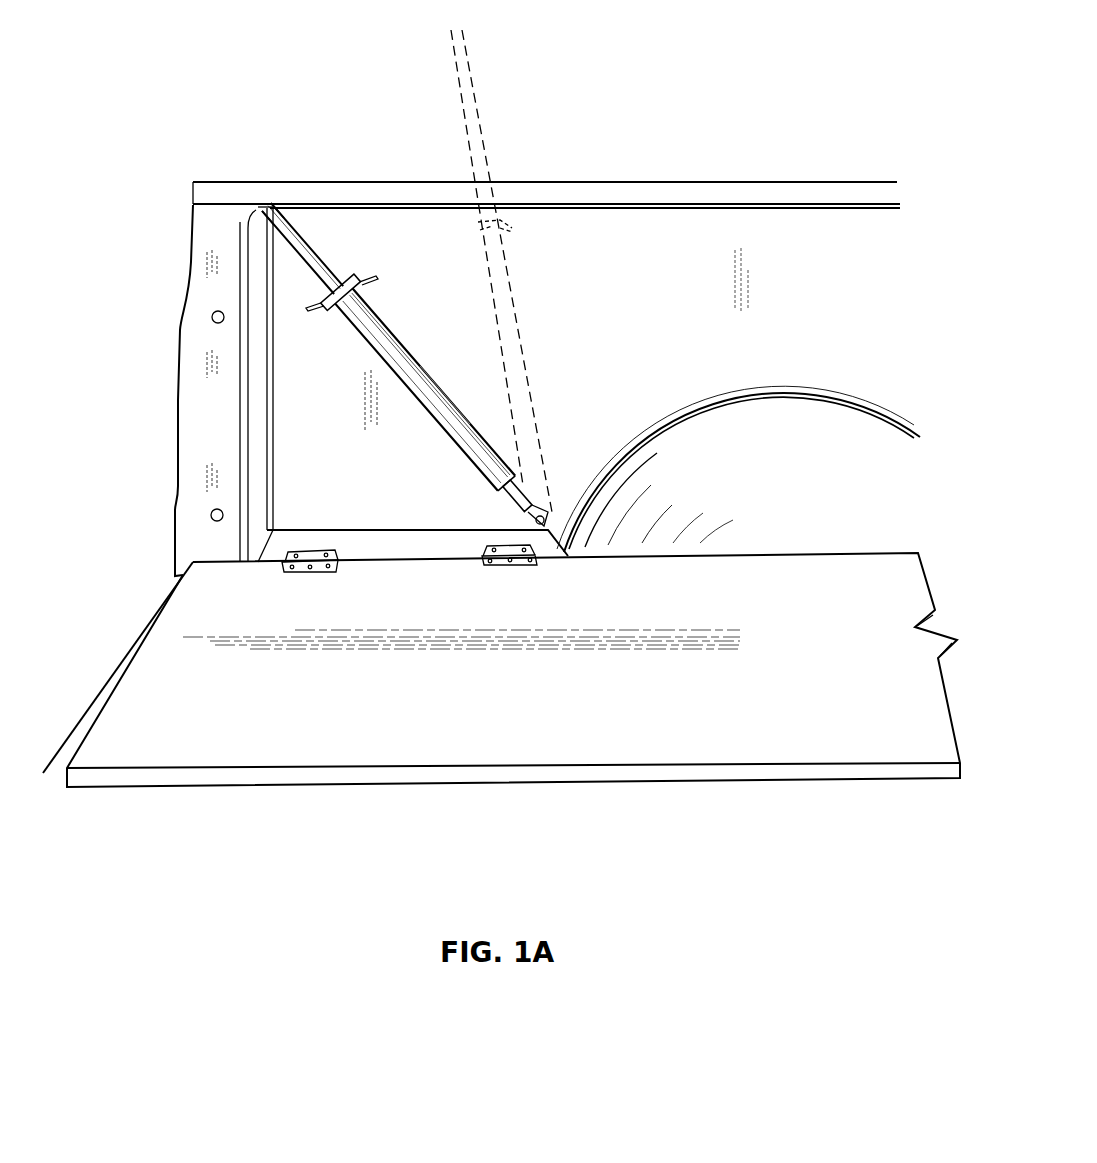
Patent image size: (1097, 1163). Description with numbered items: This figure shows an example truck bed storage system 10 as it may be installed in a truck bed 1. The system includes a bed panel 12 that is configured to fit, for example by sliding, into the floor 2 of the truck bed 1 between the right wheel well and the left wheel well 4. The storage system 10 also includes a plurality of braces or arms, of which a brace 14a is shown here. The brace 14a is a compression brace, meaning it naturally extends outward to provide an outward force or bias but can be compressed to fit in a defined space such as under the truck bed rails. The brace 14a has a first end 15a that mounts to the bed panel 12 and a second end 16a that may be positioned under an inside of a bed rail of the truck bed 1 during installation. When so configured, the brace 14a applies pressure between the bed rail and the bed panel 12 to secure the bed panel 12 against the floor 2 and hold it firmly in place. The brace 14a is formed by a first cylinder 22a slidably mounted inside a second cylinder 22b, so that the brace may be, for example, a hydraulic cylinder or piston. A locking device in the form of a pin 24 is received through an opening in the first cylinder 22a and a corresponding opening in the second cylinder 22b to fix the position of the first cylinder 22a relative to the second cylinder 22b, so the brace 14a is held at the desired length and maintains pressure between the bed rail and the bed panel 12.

The truck bed storage system 10 is at (809, 110).
The truck bed 1 is at (169, 391).
The floor 2 is at (132, 634).
The bed panel 12 is at (821, 670).
The left wheel well 4 is at (802, 392).
The second end 16a is at (303, 235).
The first cylinder 22a is at (312, 272).
The pin 24 is at (352, 290).
The second cylinder 22b is at (443, 428).
The brace 14a is at (430, 378).
The first end 15a is at (545, 500).